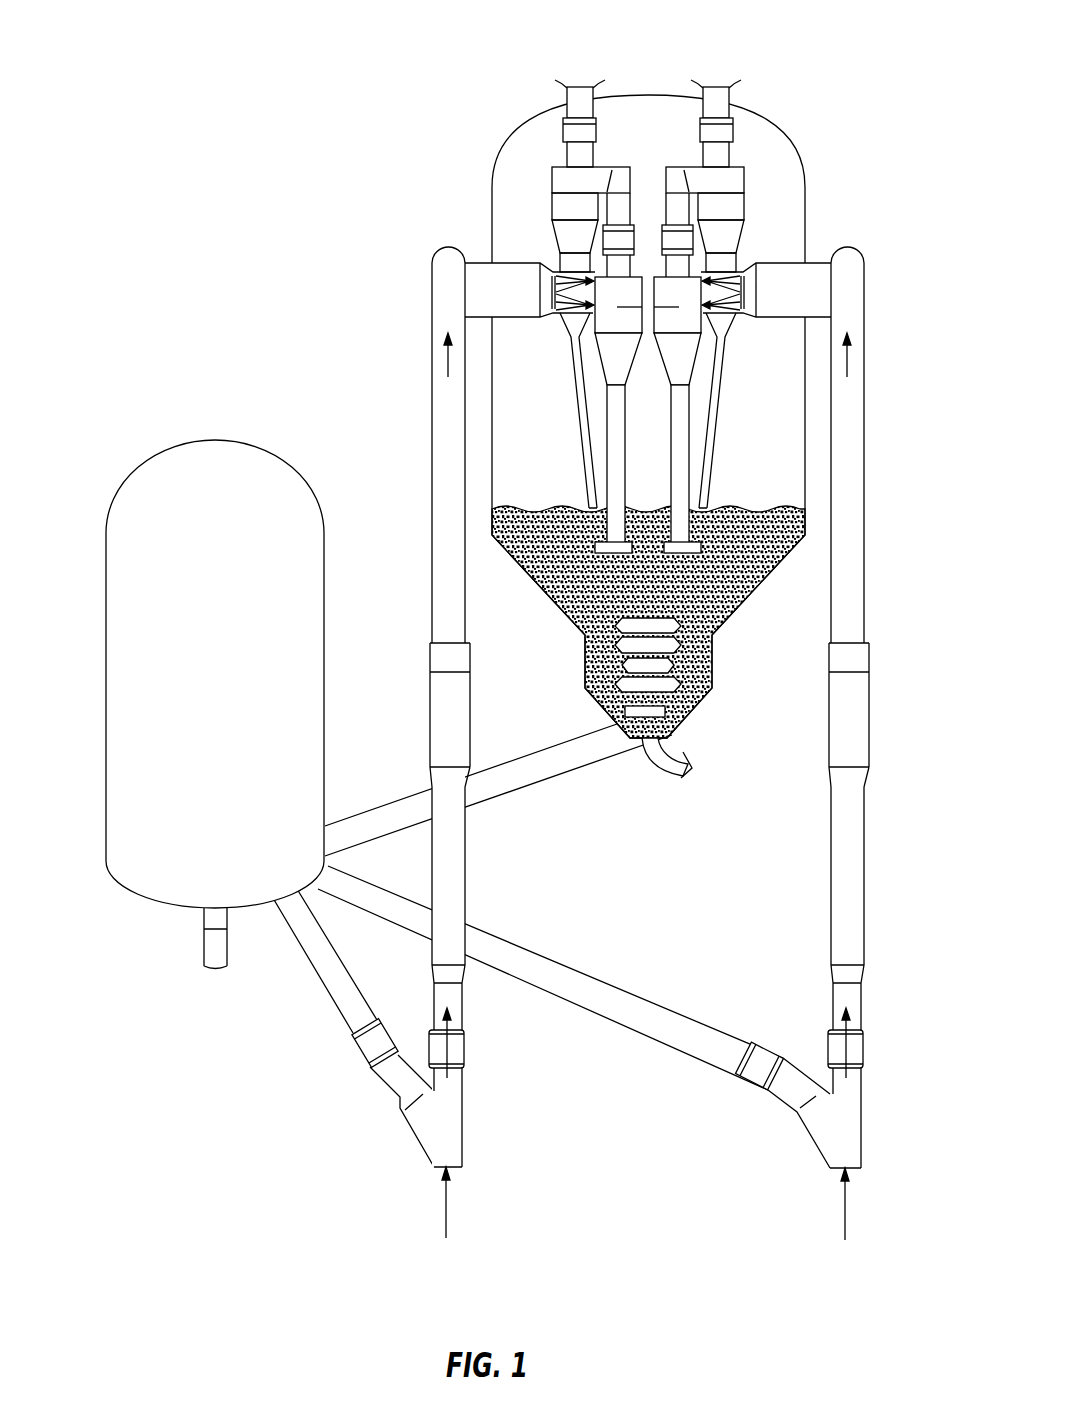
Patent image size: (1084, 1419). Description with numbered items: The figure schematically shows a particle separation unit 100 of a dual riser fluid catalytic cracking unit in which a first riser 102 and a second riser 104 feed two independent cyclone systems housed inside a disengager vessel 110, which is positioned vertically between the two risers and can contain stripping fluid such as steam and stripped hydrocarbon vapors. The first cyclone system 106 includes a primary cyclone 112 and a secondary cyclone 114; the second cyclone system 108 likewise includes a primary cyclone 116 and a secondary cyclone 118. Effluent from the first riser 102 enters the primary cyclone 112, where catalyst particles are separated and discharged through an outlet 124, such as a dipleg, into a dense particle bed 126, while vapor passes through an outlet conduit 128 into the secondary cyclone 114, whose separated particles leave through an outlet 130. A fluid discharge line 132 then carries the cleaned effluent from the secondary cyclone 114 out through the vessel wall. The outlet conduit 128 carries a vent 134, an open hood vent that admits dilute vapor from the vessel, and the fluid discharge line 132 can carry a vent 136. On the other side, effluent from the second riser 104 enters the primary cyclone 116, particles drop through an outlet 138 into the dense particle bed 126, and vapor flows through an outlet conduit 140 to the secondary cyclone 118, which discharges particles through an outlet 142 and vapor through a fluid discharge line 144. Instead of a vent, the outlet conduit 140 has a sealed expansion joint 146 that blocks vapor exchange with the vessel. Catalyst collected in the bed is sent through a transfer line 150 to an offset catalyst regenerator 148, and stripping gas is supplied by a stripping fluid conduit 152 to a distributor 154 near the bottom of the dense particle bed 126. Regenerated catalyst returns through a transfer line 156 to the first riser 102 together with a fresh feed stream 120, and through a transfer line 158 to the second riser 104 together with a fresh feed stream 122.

The particle separation unit 100 is at (495, 621).
The first riser 102 is at (468, 730).
The second riser 104 is at (864, 725).
The first cyclone system 106 is at (532, 154).
The second cyclone system 108 is at (758, 154).
The disengager vessel 110 is at (778, 130).
The primary cyclone 112 is at (570, 332).
The secondary cyclone 114 is at (552, 207).
The primary cyclone 116 is at (723, 333).
The secondary cyclone 118 is at (747, 207).
The feed stream 120 is at (447, 1202).
The feed stream 122 is at (845, 1205).
The outlet 124 is at (603, 447).
The dense particle bed 126 is at (745, 603).
The outlet conduit 128 is at (622, 167).
The outlet 130 is at (592, 492).
The fluid discharge line 132 is at (565, 88).
The vent 134 is at (604, 245).
The vent 136 is at (562, 117).
The outlet 138 is at (692, 447).
The outlet conduit 140 is at (675, 167).
The outlet 142 is at (710, 493).
The fluid discharge line 144 is at (730, 90).
The sealed expansion joint 146 is at (707, 243).
The catalyst regenerator 148 is at (141, 434).
The transfer line 150 is at (533, 782).
The stripping fluid conduit 152 is at (662, 753).
The distributor 154 is at (680, 720).
The transfer line 156 is at (330, 998).
The transfer line 158 is at (598, 977).